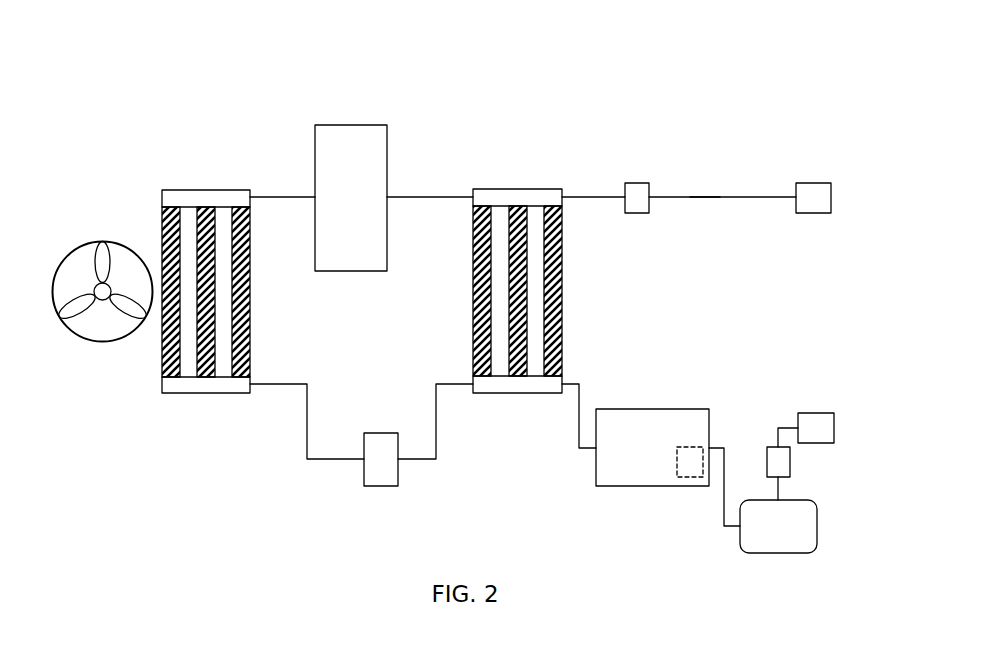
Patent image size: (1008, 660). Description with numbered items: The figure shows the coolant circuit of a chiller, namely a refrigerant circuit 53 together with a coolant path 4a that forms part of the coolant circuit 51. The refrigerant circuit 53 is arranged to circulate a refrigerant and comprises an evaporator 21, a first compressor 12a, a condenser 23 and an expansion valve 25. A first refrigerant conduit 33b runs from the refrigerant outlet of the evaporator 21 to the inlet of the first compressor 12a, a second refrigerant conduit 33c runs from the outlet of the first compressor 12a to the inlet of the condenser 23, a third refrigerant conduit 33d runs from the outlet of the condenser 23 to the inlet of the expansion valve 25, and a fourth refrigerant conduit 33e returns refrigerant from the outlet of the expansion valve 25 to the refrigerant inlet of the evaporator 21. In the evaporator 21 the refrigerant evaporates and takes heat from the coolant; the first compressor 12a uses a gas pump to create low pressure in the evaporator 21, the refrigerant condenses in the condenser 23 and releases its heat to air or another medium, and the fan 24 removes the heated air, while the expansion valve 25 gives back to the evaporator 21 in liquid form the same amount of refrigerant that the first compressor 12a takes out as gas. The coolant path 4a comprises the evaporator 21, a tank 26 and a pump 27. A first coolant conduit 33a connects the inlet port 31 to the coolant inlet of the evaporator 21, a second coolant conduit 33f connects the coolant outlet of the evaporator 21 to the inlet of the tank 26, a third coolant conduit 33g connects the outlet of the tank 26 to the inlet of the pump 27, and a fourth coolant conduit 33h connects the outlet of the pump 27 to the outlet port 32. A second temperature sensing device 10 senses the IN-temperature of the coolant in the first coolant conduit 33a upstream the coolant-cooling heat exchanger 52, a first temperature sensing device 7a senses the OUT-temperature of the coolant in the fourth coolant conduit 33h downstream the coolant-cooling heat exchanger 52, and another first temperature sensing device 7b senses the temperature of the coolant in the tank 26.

The coolant path 4a is at (700, 185).
The first temperature sensing device 7a is at (771, 456).
The first temperature sensing device 7b is at (687, 478).
The second temperature sensing device 10 is at (635, 183).
The first compressor 12a is at (333, 125).
The evaporator 21 is at (502, 195).
The condenser 23 is at (187, 197).
The fan 24 is at (88, 252).
The expansion valve 25 is at (374, 440).
The tank 26 is at (651, 418).
The pump 27 is at (810, 522).
The inlet port 31 is at (817, 183).
The outlet port 32 is at (817, 413).
The first coolant conduit 33a is at (727, 197).
The first refrigerant conduit 33b is at (420, 197).
The second refrigerant conduit 33c is at (275, 197).
The third refrigerant conduit 33d is at (281, 383).
The fourth refrigerant conduit 33e is at (436, 410).
The second coolant conduit 33f is at (578, 383).
The third coolant conduit 33g is at (727, 527).
The fourth coolant conduit 33h is at (778, 428).
The coolant circuit 51 is at (771, 134).
The coolant-cooling heat exchanger 52 is at (562, 250).
The refrigerant circuit 53 is at (226, 110).